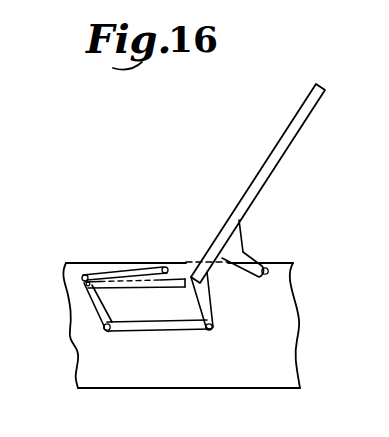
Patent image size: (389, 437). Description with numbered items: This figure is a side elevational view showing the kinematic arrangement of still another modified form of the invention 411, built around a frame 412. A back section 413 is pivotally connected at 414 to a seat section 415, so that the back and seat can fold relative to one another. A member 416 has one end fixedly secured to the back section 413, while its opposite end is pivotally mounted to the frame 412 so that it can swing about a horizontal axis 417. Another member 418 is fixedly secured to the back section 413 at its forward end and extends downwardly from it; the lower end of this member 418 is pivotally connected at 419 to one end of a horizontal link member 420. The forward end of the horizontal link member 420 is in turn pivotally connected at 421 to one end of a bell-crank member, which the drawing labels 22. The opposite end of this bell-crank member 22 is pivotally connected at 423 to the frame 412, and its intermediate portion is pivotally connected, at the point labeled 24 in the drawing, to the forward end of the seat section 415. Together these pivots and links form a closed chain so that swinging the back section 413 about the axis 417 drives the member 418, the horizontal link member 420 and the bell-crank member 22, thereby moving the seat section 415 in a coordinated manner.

The modified form of the invention 411 is at (140, 211).
The frame 412 is at (277, 308).
The back section 413 is at (273, 157).
The pivotal connection 414 is at (185, 281).
The seat section 415 is at (121, 283).
The member 416 is at (249, 247).
The horizontal axis 417 is at (273, 264).
The member 418 is at (202, 305).
The pivotal connection 419 is at (212, 333).
The horizontal link member 420 is at (128, 329).
The pivotal connection 421 is at (103, 328).
The pivotal connection 423 is at (168, 265).
The left frame bar 22 is at (94, 307).
The thin pivot bar 24 is at (84, 274).